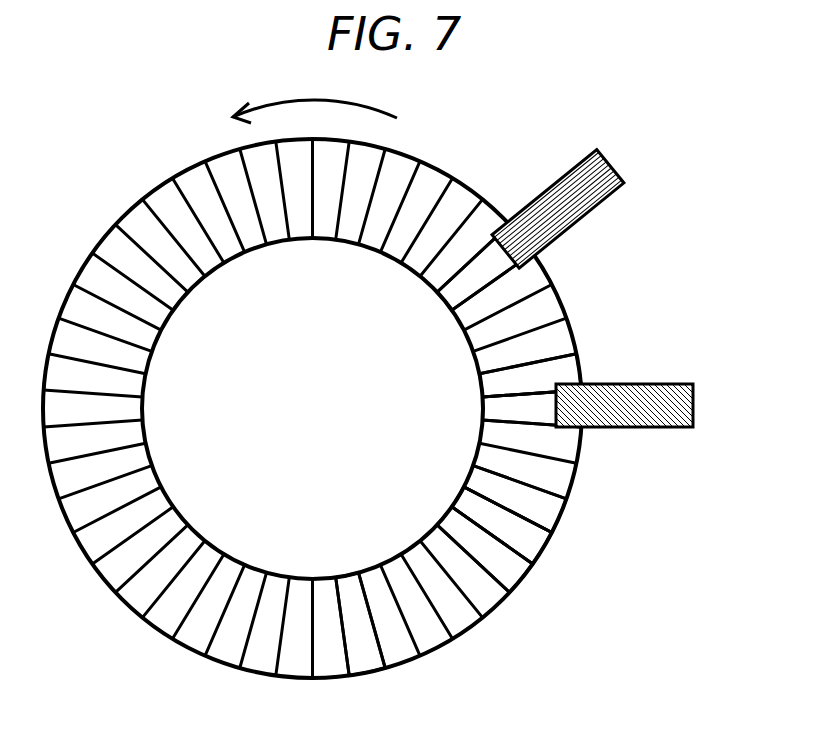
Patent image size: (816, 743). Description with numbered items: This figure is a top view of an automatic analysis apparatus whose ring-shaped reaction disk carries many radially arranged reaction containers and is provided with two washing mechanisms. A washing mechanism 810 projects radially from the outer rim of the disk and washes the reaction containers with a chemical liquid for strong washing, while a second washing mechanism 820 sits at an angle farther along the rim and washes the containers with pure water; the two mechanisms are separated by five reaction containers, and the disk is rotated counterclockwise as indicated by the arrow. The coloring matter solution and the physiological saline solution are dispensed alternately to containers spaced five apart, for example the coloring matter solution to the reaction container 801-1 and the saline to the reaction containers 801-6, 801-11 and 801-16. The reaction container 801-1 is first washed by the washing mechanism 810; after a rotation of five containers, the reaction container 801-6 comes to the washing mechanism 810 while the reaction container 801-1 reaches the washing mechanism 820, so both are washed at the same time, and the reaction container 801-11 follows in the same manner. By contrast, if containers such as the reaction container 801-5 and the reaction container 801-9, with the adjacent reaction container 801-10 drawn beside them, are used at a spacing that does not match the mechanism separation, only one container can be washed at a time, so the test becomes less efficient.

The reaction container 801-1 is at (470, 275).
The reaction container 801-5 is at (570, 363).
The reaction container 801-6 is at (535, 403).
The reaction container 801-9 is at (545, 512).
The rotor segment 10 801-10 is at (532, 543).
The reaction container 801-11 is at (513, 570).
The reaction container 801-16 is at (365, 663).
The washing mechanism 810 is at (680, 402).
The washing mechanism 820 is at (605, 185).